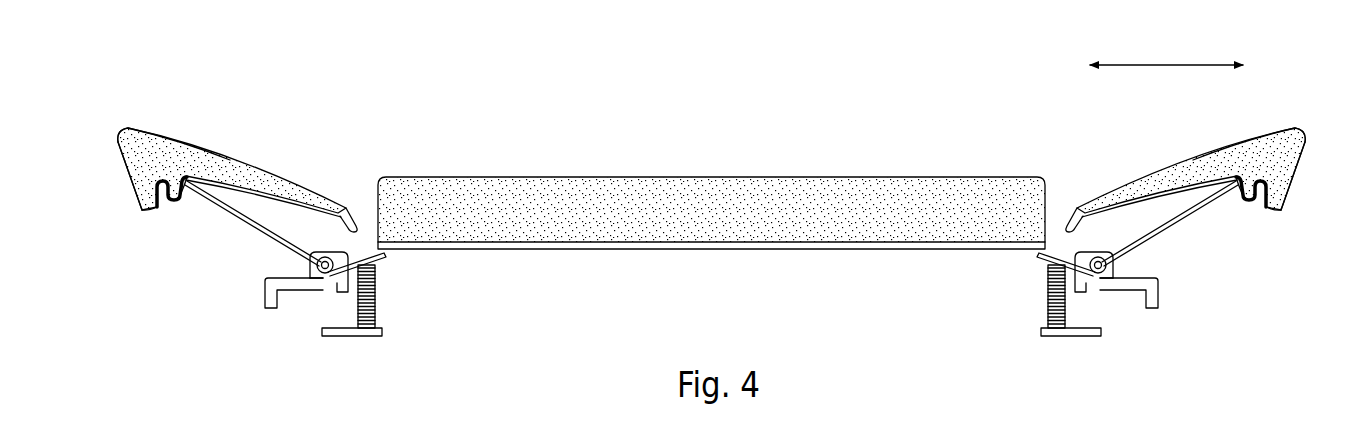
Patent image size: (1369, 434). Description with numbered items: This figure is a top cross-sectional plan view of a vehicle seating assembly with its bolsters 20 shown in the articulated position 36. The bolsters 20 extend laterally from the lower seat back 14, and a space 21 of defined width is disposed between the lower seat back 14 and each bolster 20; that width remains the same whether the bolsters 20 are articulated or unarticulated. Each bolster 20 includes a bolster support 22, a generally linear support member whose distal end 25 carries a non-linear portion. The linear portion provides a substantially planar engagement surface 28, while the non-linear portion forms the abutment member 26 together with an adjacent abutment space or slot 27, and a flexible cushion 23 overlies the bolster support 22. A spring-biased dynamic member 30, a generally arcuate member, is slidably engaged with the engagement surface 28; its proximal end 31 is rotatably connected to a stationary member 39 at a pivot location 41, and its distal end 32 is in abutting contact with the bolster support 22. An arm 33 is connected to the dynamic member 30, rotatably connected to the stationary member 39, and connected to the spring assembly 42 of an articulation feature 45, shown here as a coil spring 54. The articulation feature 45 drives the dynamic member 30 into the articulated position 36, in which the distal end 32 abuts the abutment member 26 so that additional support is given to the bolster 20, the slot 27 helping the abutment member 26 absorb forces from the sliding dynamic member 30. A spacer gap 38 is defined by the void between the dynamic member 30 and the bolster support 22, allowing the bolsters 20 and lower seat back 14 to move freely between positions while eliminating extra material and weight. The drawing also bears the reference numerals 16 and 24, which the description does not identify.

The lower seat back 14 is at (679, 249).
The base 16 is at (365, 336).
The bolster 20 is at (90, 141).
The space 21 is at (364, 216).
The bolster support 22 is at (249, 190).
The flexible cushion 23 is at (143, 128).
The head bottom 24 is at (150, 210).
The distal end 25 is at (193, 174).
The abutment member 26 is at (178, 189).
The slot 27 is at (172, 207).
The substantially planar engagement surface 28 is at (315, 187).
The spring-biased dynamic member 30 is at (265, 233).
The proximal end 31 is at (302, 262).
The distal end 32 is at (198, 176).
The arm 33 is at (382, 257).
The articulated position 36 is at (80, 274).
The spacer gap 38 is at (307, 229).
The stationary member 39 is at (315, 281).
The pivot location 41 is at (326, 278).
The spring assembly 42 is at (376, 297).
The articulation feature 45 is at (448, 338).
The coil spring 54 is at (373, 302).